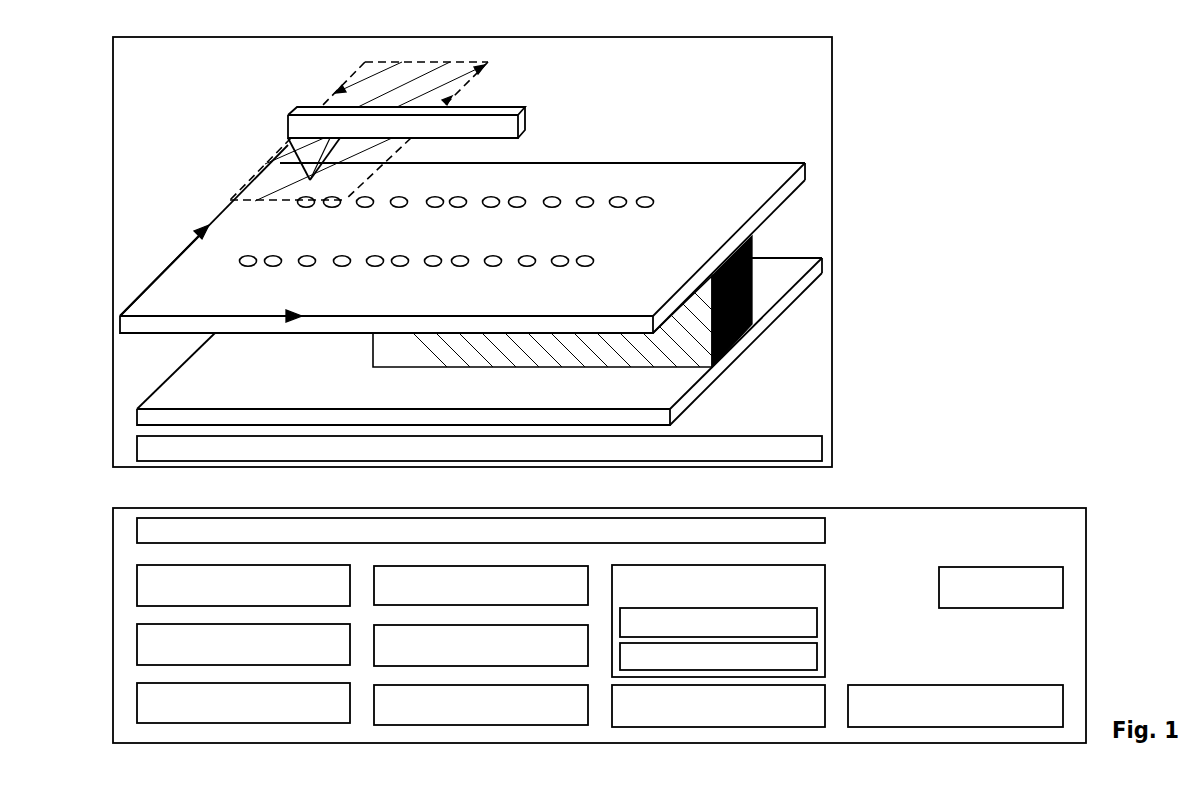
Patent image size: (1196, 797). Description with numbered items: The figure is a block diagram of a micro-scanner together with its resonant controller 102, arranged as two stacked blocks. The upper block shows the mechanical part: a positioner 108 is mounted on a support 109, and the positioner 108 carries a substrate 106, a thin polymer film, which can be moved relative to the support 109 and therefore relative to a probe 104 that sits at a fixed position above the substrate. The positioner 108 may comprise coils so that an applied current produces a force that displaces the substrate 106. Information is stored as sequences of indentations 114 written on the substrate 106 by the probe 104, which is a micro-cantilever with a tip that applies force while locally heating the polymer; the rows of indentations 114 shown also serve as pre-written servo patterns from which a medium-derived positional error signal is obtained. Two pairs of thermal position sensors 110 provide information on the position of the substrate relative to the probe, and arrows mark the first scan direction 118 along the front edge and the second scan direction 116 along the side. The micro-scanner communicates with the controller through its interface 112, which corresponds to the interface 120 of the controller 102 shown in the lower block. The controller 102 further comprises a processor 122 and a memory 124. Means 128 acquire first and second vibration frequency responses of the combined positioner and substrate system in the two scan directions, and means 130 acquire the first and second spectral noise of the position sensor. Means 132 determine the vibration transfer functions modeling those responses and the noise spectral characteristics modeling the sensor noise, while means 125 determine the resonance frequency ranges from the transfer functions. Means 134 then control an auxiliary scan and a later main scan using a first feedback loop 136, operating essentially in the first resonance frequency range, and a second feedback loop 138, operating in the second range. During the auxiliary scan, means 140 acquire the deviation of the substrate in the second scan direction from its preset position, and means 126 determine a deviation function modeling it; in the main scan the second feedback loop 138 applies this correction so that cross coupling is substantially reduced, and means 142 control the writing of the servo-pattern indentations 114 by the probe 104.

The controller 102 is at (1027, 508).
The probe 104 is at (497, 107).
The substrate 106 is at (742, 163).
The positioner 108 is at (750, 317).
The support 109 is at (818, 270).
The thermal position sensors 110 is at (430, 63).
The interface 112 is at (822, 444).
The indentations 114 is at (645, 197).
The second scan direction 116 is at (173, 263).
The first scan direction 118 is at (157, 336).
The interface 120 is at (825, 530).
The processor 122 is at (137, 585).
The memory 124 is at (137, 643).
The means for determining resonance frequency ranges 125 is at (1026, 567).
The means for determining deviation function 126 is at (137, 701).
The means for acquiring first and second vibration frequency response 128 is at (472, 566).
The means for acquiring first and second spectral noise 130 is at (588, 650).
The means for determining vibration transfer function and noise spectral characteris 132 is at (480, 725).
The means for controlling auxiliary and main scan 134 is at (754, 621).
The first feedback loop 136 is at (817, 622).
The second feedback loop 138 is at (817, 655).
The means for acquiring deviation 140 is at (743, 727).
The means for controlling servo pattern writing 142 is at (1026, 685).